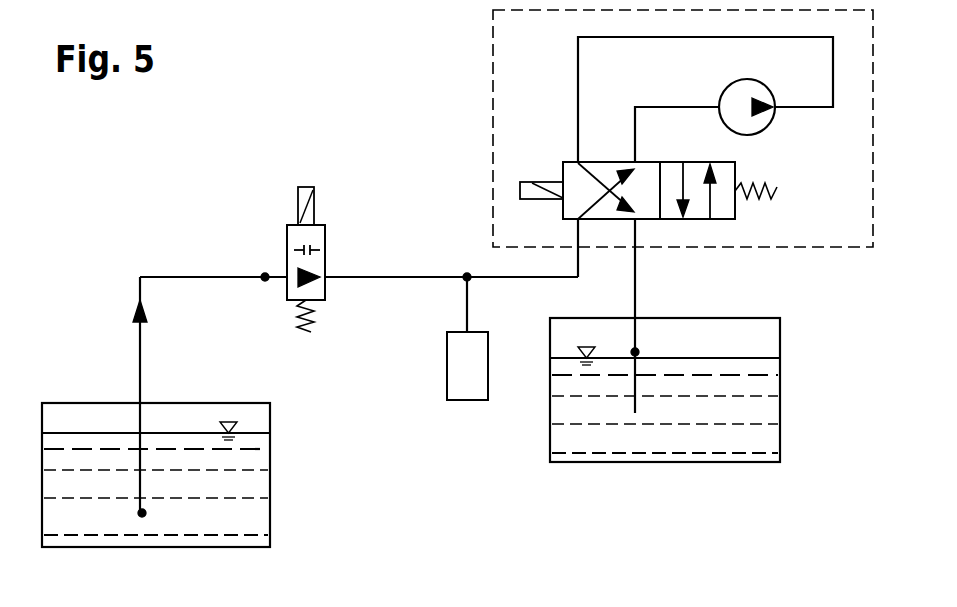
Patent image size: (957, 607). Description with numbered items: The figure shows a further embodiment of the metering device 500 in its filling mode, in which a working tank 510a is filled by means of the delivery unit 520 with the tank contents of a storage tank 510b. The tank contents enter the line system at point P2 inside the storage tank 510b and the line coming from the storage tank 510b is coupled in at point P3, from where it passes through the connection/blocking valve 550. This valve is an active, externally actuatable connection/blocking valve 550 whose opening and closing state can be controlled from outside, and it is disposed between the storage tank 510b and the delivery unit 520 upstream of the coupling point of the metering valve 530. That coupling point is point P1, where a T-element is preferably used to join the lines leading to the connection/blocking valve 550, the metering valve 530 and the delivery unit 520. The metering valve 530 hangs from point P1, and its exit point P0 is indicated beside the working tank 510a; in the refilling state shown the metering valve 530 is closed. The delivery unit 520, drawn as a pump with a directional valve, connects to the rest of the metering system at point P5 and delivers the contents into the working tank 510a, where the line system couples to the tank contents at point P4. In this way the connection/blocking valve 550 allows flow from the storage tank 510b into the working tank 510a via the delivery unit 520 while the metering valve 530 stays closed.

The metering device 500 is at (453, 551).
The working tank 510a is at (550, 440).
The storage tank 510b is at (270, 483).
The delivery unit 520 is at (493, 57).
The metering valve 530 is at (447, 367).
The connection/blocking valve 550 is at (287, 238).
The exit point of the metering valve P0 is at (522, 403).
The coupling point of the metering valve P1 is at (465, 263).
The point of entry of the tank contents of the storage tank P2 is at (127, 517).
The point of coupling of the line coming from the storage tank P3 is at (256, 263).
The coupling of the line system to the working tank P4 is at (653, 342).
The connection point of the delivery unit P5 is at (660, 233).